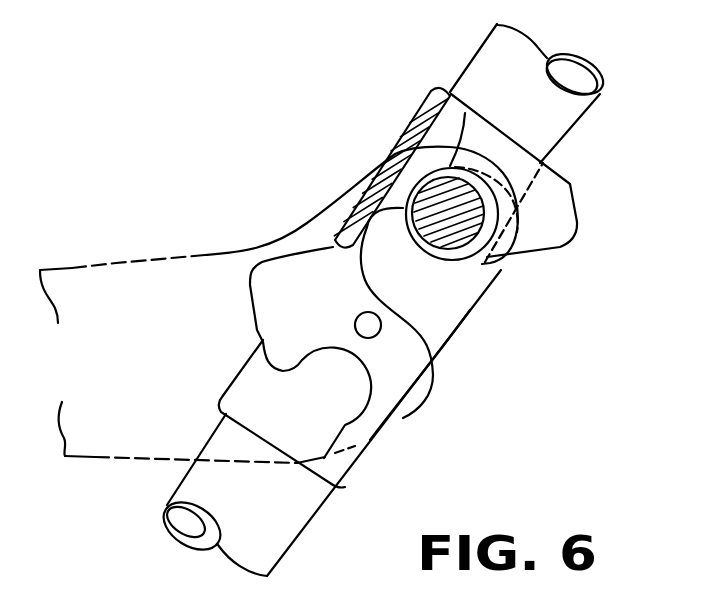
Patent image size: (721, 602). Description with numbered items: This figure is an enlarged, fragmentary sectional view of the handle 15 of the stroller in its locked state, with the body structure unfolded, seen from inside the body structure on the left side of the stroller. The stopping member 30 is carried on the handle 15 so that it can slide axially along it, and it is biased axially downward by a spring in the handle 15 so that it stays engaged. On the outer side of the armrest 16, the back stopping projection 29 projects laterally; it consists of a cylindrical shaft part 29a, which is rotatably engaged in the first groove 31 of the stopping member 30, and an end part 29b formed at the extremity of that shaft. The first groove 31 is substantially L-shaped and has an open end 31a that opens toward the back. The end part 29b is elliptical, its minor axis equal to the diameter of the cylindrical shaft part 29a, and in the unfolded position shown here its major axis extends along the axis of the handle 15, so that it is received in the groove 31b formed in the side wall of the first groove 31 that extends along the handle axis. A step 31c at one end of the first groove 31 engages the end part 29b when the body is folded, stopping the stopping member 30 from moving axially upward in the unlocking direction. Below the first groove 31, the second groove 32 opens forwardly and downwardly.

The handle 15 is at (570, 125).
The armrest 16 is at (116, 262).
The back stopping projection 29 is at (590, 317).
The cylindrical shaft part 29a is at (450, 237).
The end part 29b is at (440, 262).
The stopping member 30 is at (415, 121).
The first groove 31 is at (368, 255).
The open end 31a is at (478, 262).
The groove 31b is at (401, 211).
The step 31c is at (387, 226).
The second groove 32 is at (333, 408).